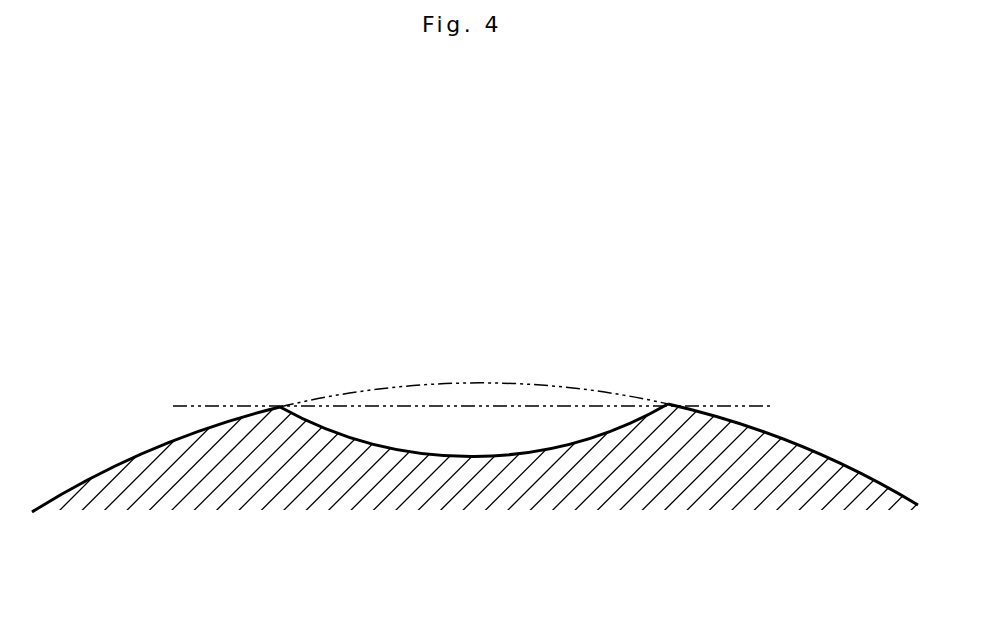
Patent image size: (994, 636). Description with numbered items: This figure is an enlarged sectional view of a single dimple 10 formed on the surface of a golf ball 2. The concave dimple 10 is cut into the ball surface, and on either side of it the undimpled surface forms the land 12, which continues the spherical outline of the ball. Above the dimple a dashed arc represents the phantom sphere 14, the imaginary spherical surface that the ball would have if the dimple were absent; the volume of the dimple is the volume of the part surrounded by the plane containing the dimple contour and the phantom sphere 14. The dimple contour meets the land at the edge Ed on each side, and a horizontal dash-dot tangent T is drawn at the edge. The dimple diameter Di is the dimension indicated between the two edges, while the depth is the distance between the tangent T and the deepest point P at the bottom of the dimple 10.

The golf ball 2 is at (872, 215).
The dimple 10 is at (390, 447).
The land 12 is at (807, 447).
The phantom sphere 14 is at (513, 385).
The tangent T is at (203, 407).
The edge Ed is at (277, 407).
The diameter Di is at (668, 398).
The deepest point P is at (472, 457).